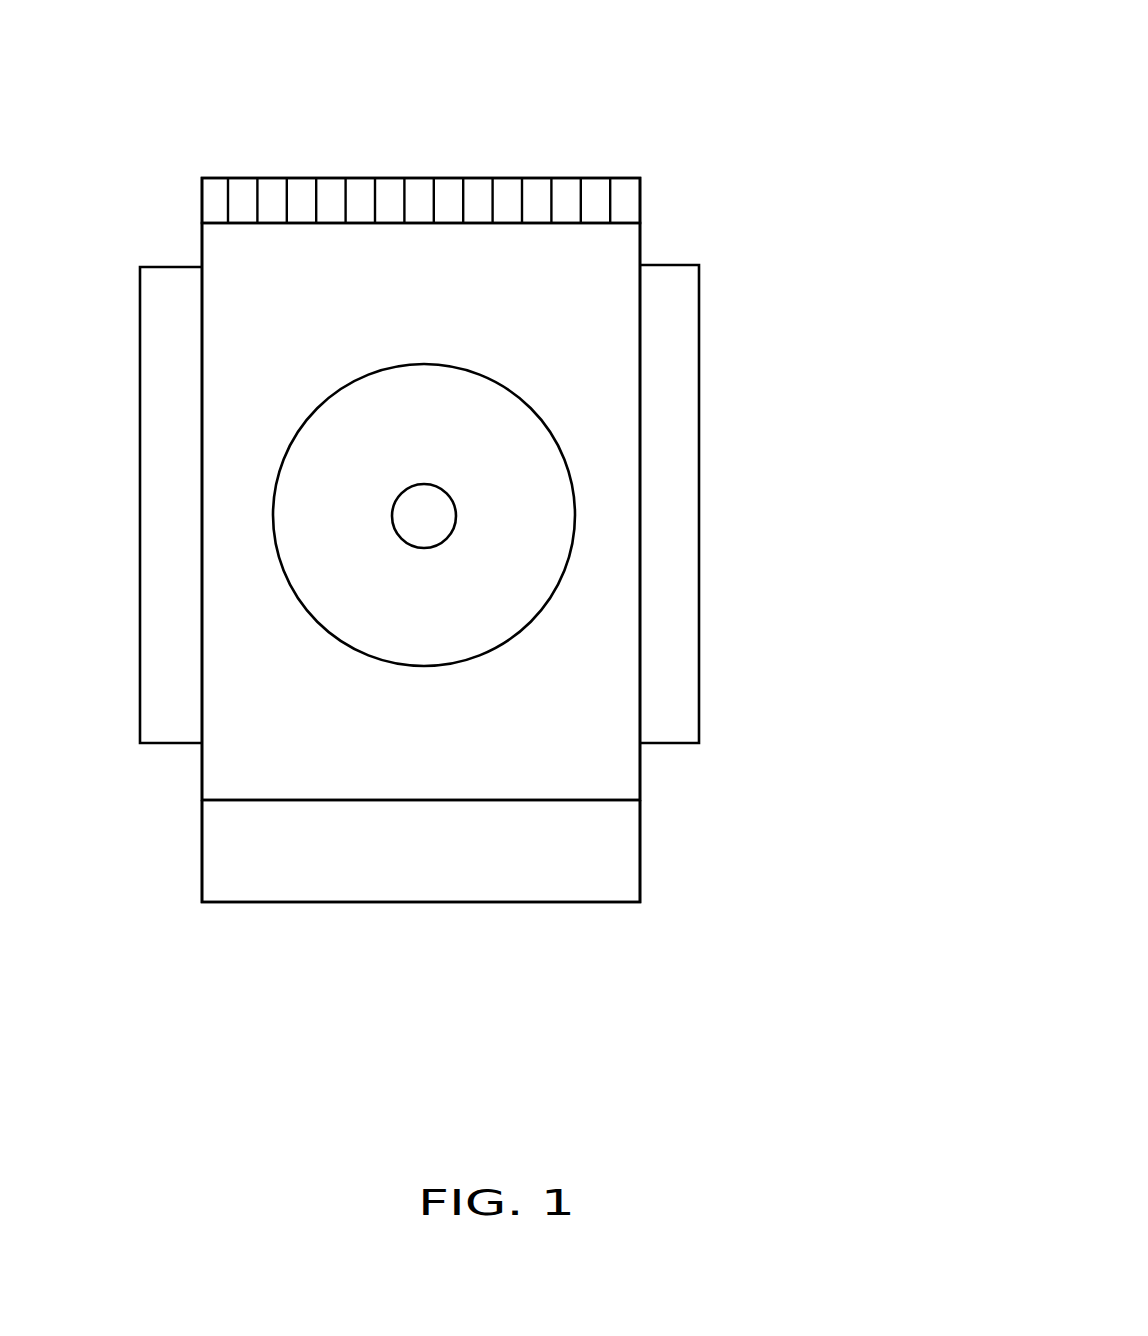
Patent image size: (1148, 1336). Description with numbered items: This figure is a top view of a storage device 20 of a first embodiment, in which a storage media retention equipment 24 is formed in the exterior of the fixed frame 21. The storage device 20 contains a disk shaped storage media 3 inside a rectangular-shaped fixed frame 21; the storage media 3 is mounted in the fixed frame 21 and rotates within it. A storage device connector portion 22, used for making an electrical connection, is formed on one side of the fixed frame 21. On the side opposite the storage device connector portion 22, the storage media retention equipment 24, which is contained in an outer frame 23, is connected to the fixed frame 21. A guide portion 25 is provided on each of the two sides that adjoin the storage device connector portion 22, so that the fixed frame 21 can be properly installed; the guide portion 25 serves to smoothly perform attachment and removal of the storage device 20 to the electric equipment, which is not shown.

The storage device 20 is at (852, 100).
The storage device connector portion 22 is at (505, 188).
The fixed frame 21 is at (640, 590).
The outer frame 23 is at (640, 872).
The storage media retention equipment 24 is at (525, 878).
The guide portion 25 is at (140, 400).
The storage media 3 is at (400, 637).